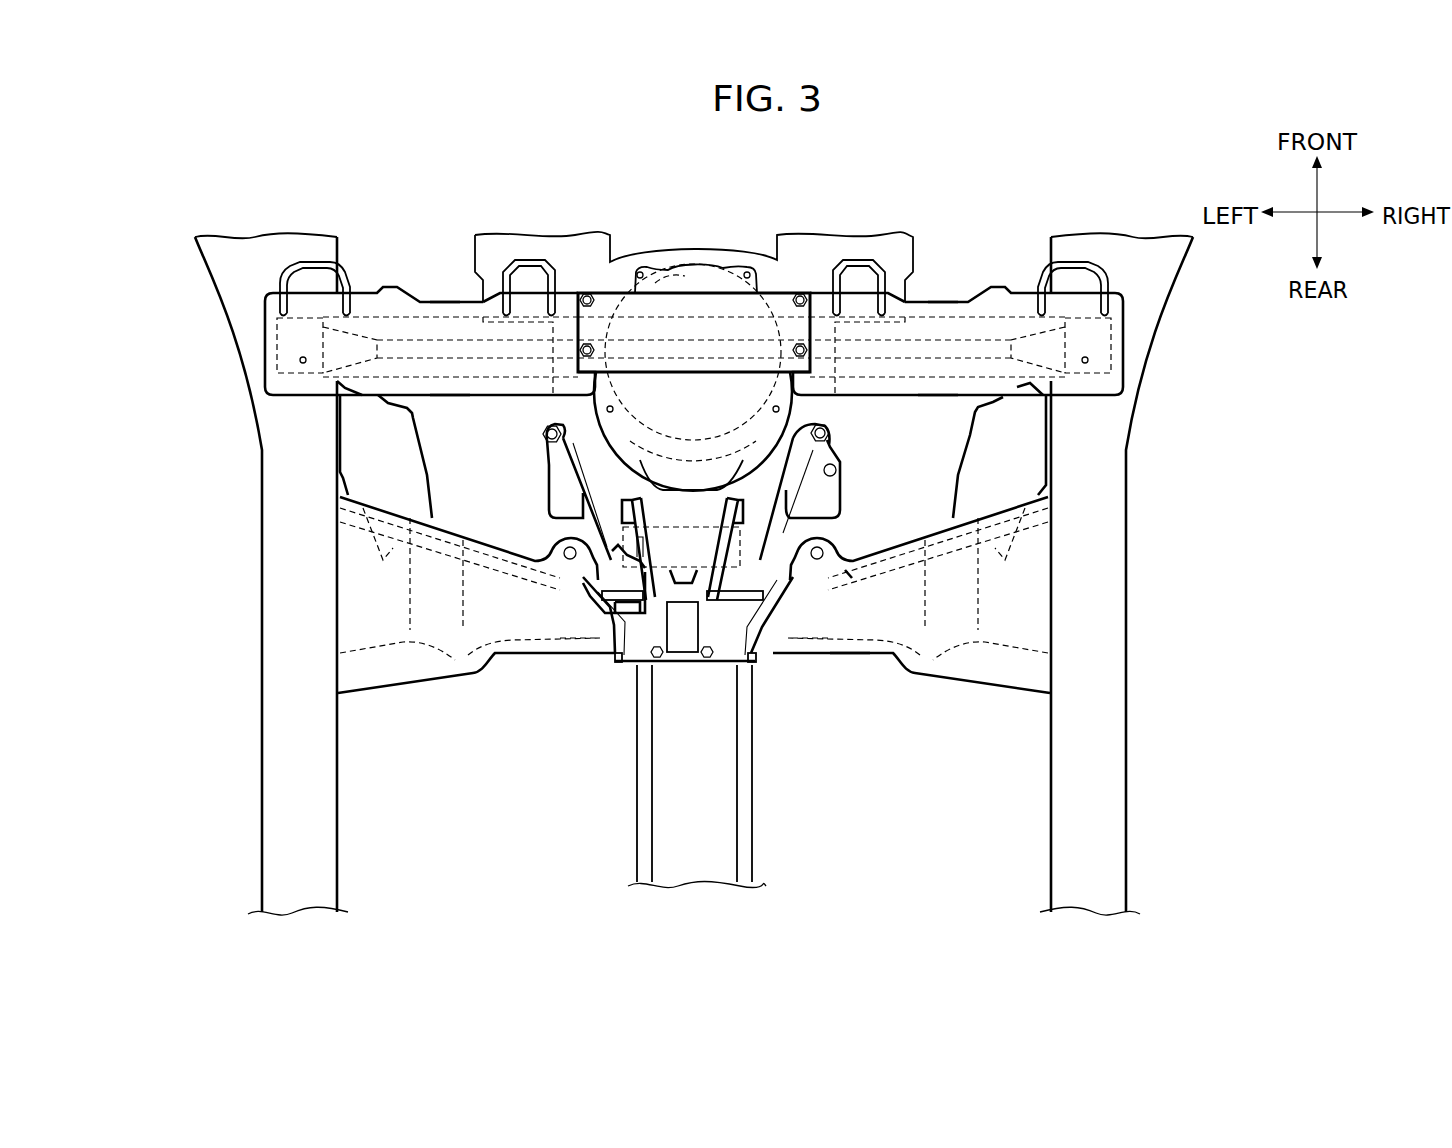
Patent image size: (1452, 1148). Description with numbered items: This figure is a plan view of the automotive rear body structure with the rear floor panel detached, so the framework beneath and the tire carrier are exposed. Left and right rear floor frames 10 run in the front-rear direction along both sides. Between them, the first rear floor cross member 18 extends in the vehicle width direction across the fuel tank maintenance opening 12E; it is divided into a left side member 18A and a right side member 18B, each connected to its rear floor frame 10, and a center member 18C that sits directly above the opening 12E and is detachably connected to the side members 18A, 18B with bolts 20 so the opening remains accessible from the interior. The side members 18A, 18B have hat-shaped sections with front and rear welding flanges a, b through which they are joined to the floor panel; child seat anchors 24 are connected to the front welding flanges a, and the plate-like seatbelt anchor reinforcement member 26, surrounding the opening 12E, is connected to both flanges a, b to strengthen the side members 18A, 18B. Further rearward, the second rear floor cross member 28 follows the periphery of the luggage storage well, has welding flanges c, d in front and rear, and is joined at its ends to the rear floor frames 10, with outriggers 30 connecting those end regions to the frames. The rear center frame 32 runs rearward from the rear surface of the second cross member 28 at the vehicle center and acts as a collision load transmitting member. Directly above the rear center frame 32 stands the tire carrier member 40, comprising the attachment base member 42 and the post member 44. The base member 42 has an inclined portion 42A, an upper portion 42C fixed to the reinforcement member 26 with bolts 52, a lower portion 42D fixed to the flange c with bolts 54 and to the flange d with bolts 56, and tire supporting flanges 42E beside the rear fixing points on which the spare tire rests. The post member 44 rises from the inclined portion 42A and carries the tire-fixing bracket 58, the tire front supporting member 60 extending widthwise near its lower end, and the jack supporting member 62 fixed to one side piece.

The rear floor frame 10 is at (270, 556).
The fuel tank maintenance opening 12E is at (678, 276).
The first rear floor cross member 18 is at (919, 292).
The left side member 18A is at (386, 296).
The right side member 18B is at (988, 298).
The center member 18C is at (723, 327).
The bolts 20 is at (590, 345).
The anchors 24 is at (318, 262).
The seatbelt anchor reinforcement member 26 is at (880, 246).
The second rear floor cross member 28 is at (874, 632).
The outriggers 30 is at (413, 494).
The rear center frame 32 is at (728, 822).
The tire carrier member 40 is at (563, 606).
The attachment base member 42 is at (580, 450).
The inclined portion 42A is at (830, 518).
The upper portion 42C is at (837, 454).
The lower portion 42D is at (626, 665).
The tire supporting flanges 42E is at (618, 665).
The post member 44 is at (682, 587).
The bolts 52 is at (546, 428).
The bolts 54 is at (570, 562).
The bolts 56 is at (706, 667).
The tire-fixing bracket 58 is at (686, 642).
The tire front supporting member 60 is at (727, 598).
The jack supporting member 62 is at (622, 568).
The welding flange a is at (443, 304).
The welding flange b is at (450, 388).
The welding flange c is at (850, 568).
The welding flange d is at (847, 655).